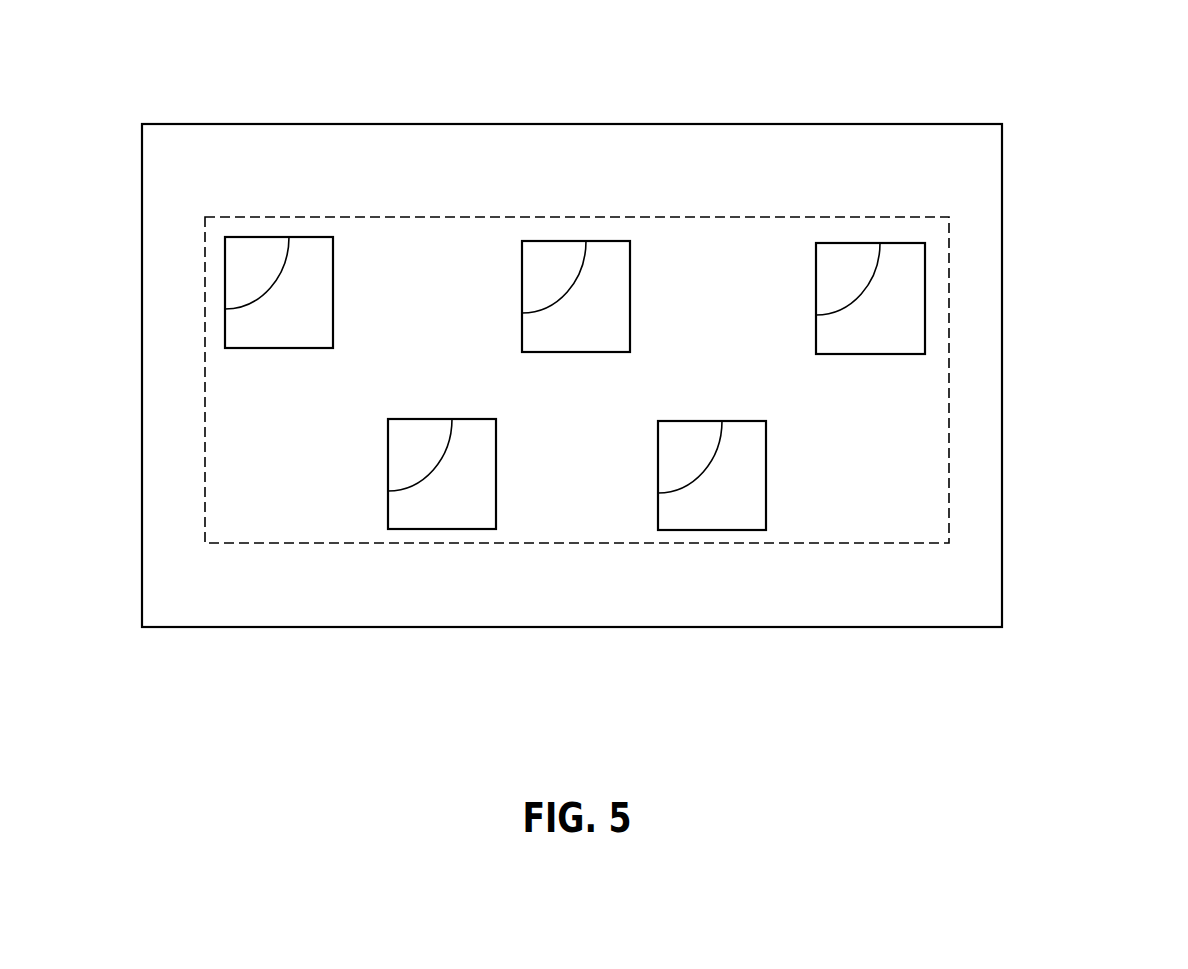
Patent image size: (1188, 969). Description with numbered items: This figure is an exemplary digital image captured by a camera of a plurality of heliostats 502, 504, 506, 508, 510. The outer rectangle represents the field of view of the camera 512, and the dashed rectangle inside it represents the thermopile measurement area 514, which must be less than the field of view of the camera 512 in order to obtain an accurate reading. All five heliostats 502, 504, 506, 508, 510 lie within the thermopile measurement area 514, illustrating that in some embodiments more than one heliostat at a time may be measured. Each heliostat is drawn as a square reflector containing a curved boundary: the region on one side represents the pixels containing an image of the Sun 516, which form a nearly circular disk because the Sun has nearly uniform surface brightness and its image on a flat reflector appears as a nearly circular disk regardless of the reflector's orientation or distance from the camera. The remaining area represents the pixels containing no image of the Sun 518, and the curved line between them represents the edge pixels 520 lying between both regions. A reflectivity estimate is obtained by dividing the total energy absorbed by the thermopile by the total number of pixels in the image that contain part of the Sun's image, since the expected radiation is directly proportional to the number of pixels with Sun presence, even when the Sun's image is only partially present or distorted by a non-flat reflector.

The heliostat 502 is at (270, 223).
The heliostat 504 is at (671, 177).
The heliostat 506 is at (925, 336).
The heliostat 508 is at (424, 530).
The heliostat 510 is at (700, 531).
The field of view of the camera 512 is at (1002, 542).
The thermopile measurement area 514 is at (868, 543).
The pixels containing an image of the Sun 516 is at (254, 254).
The pixels containing no image of the Sun 518 is at (309, 278).
The edge pixels 520 is at (579, 279).